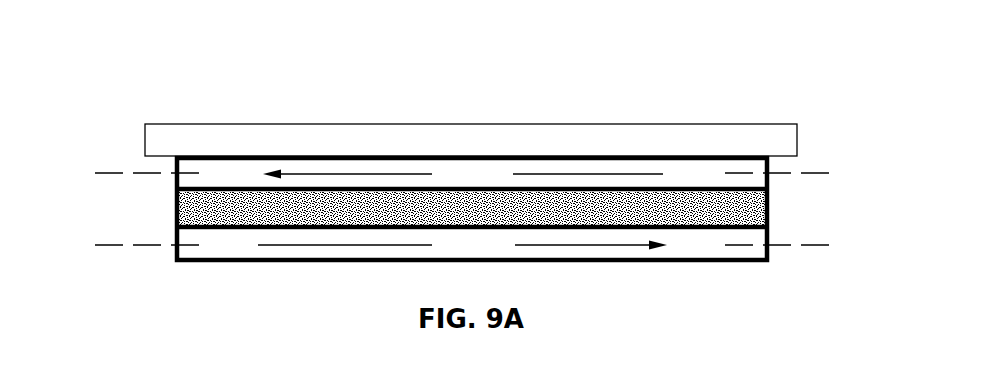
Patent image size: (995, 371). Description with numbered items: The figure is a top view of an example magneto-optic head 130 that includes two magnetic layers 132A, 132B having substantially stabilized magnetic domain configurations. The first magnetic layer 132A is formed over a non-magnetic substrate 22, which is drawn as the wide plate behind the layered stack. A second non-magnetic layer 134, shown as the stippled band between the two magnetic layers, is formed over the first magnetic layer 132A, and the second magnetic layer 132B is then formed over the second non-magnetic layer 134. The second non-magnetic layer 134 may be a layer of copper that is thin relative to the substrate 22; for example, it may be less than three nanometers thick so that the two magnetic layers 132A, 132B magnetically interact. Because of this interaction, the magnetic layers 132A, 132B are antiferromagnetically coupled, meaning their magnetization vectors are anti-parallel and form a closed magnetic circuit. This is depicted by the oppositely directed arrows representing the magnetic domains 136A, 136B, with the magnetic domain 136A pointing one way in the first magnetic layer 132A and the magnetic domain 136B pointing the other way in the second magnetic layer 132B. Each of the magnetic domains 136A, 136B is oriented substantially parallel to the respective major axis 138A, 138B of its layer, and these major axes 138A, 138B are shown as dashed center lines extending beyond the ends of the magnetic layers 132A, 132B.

The magneto-optic head 130 is at (117, 90).
The non-magnetic substrate 22 is at (441, 132).
The first magnetic layer 132A is at (219, 173).
The second magnetic layer 132B is at (228, 253).
The second non-magnetic layer 134 is at (750, 212).
The magnetic domain 136A is at (463, 175).
The magnetic domain 136B is at (462, 245).
The major axis 138A is at (133, 173).
The major axis 138B is at (133, 246).